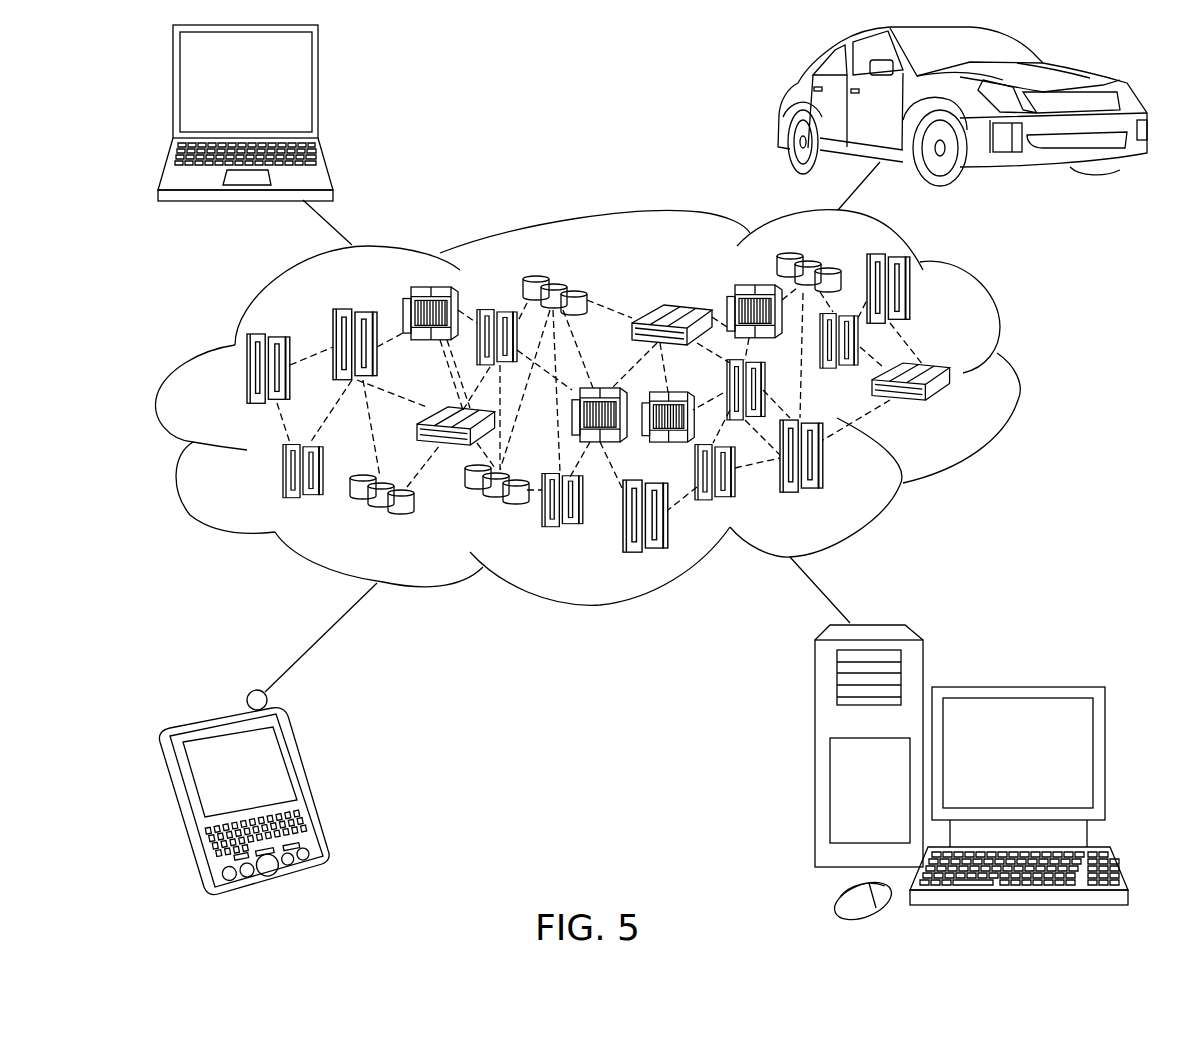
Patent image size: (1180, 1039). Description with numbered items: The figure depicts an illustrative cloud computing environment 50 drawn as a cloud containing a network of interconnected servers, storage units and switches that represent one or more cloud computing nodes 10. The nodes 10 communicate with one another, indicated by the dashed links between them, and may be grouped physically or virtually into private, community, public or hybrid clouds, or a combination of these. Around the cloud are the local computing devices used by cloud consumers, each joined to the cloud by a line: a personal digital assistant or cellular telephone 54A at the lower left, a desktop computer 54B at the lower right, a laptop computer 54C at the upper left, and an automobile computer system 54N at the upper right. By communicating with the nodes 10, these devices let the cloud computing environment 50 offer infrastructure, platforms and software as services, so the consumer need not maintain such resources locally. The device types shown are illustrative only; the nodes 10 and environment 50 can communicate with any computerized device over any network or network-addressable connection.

The cloud computing node 10 is at (955, 413).
The cloud computing environment 50 is at (1017, 378).
The personal digital assistant or cellular telephone 54A is at (313, 783).
The desktop computer 54B is at (1017, 686).
The laptop computer 54C is at (318, 90).
The automobile computer system 54N is at (783, 107).